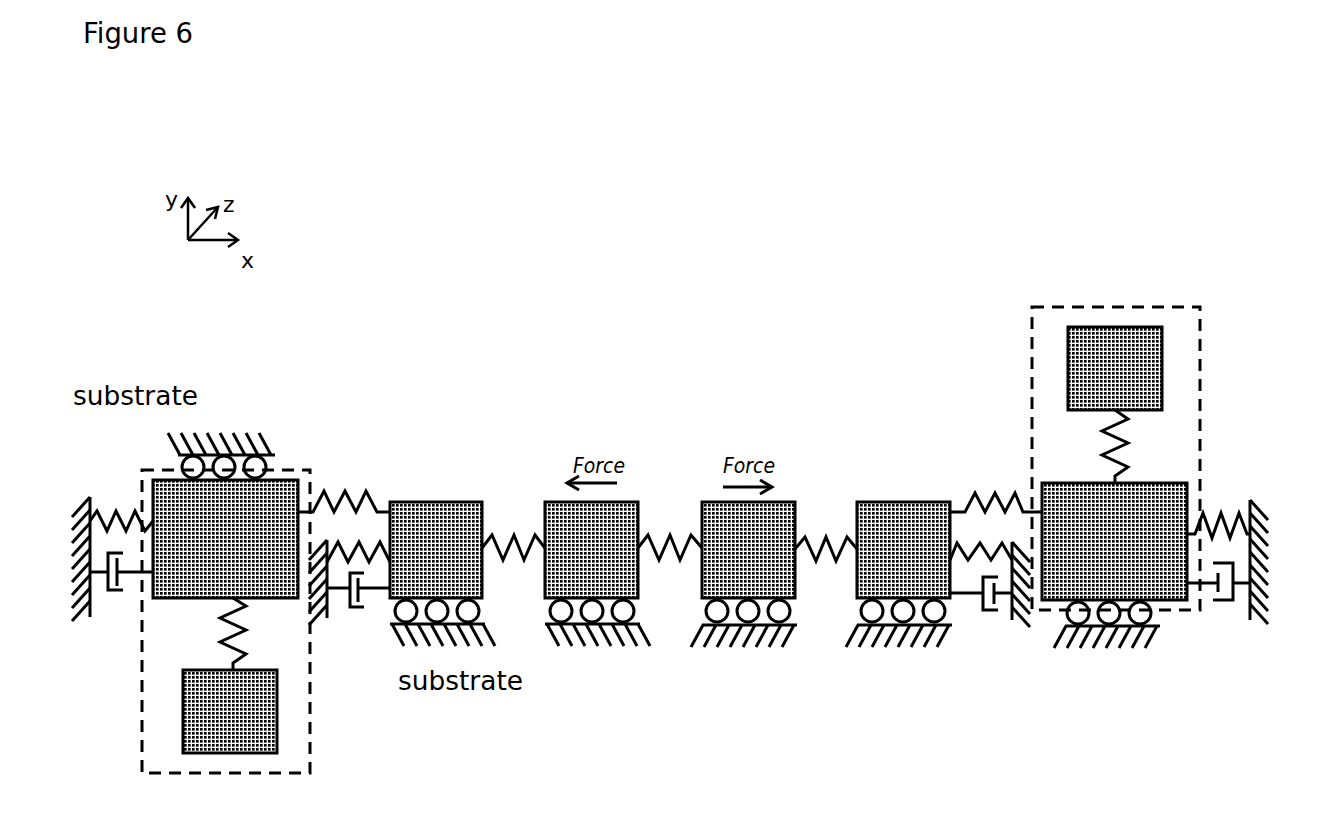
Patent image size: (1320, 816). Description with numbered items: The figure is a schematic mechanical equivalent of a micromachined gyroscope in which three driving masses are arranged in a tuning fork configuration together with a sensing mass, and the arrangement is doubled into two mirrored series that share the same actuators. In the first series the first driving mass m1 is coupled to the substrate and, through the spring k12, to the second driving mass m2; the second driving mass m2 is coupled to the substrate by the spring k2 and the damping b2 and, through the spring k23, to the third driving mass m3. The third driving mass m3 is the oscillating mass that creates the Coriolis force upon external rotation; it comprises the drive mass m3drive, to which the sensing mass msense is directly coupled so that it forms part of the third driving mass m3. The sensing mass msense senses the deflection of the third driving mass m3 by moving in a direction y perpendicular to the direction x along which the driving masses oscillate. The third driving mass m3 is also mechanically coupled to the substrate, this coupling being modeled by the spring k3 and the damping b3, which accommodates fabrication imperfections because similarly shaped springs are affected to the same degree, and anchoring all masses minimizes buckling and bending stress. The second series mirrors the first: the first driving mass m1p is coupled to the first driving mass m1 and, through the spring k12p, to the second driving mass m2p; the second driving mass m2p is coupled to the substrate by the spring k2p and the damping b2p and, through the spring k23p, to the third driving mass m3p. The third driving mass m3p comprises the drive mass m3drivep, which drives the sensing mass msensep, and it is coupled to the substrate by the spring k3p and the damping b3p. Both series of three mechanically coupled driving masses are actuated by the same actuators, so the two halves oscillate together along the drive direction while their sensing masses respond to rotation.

The third driving mass of second series m3p is at (253, 621).
The drive mass of third driving mass of second series m3drivep is at (225, 515).
The sensing mass of second series msensep is at (230, 675).
The spring coupling third driving mass of second series to substrate k3p is at (121, 497).
The damping of third driving mass of second series b3p is at (121, 590).
The spring between second and third driving masses of second series k23p is at (344, 480).
The spring coupling second driving mass of second series to substrate k2p is at (358, 536).
The damping of second driving mass of second series b2p is at (358, 608).
The second driving mass of second series m2p is at (442, 574).
The spring between first and second driving masses of second series k12p is at (513, 522).
The first driving mass of second series m1p is at (597, 574).
The first driving mass m1 is at (744, 574).
The spring between first and second driving masses k12 is at (747, 525).
The second driving mass m2 is at (899, 574).
The spring between second and third driving masses k23 is at (996, 480).
The spring coupling second driving mass to substrate k2 is at (981, 536).
The damping of second driving mass b2 is at (981, 613).
The third driving mass m3 is at (1093, 454).
The drive mass of third driving mass m3drive is at (1114, 565).
The sensing mass msense is at (1115, 405).
The spring coupling third driving mass to substrate k3 is at (1218, 505).
The damping of third driving mass b3 is at (1218, 600).